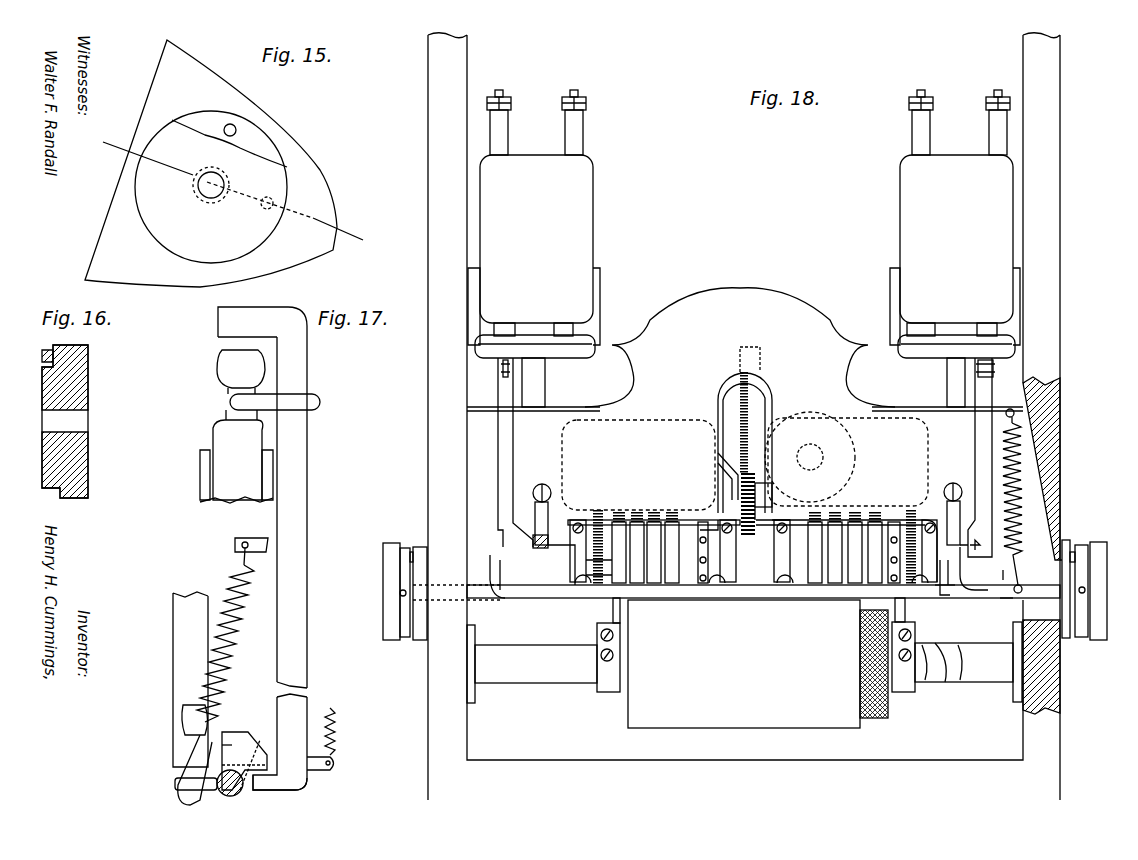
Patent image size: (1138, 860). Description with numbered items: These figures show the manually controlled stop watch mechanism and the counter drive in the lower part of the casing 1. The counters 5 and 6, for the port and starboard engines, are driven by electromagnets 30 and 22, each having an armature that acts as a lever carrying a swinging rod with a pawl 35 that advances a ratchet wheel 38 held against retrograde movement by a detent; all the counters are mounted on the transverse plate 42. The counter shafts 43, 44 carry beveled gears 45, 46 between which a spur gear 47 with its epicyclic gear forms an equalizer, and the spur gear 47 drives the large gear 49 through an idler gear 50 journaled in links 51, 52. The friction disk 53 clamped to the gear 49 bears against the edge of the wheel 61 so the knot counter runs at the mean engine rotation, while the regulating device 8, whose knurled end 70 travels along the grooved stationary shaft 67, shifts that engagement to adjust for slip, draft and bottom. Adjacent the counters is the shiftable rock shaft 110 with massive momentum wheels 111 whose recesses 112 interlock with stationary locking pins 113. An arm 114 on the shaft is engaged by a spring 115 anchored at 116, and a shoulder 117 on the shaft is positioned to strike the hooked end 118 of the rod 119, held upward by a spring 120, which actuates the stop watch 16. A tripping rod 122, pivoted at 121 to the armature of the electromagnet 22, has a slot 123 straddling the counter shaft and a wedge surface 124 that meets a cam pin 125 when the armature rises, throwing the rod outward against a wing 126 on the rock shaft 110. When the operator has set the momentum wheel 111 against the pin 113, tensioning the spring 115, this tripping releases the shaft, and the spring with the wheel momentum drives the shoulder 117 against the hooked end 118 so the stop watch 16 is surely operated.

In FIG. 18, the casing 1 is at (1050, 266).
In FIG. 18, the counter 5 is at (650, 522).
In FIG. 18, the counter 6 is at (842, 520).
In FIG. 18, the regulating device 8 is at (848, 728).
In FIG. 15, the stop watch 16 is at (235, 189).
In FIG. 17, the stop watch 16 is at (225, 456).
In FIG. 18, the electromagnet 22 is at (955, 217).
In FIG. 18, the electromagnet 30 is at (534, 217).
In FIG. 18, the pawl 35 is at (950, 583).
In FIG. 18, the ratchet wheel 38 is at (533, 540).
In FIG. 18, the transverse plate 42 is at (792, 306).
In FIG. 18, the counter shaft 43 is at (974, 539).
In FIG. 18, the counter shaft 44 is at (565, 547).
In FIG. 18, the beveled gear 45 is at (780, 522).
In FIG. 18, the beveled gear 46 is at (713, 530).
In FIG. 18, the spur gear 47 is at (740, 506).
In FIG. 18, the gear wheel 49 is at (740, 397).
In FIG. 18, the idler gear 50 is at (790, 486).
In FIG. 18, the link 51 is at (805, 486).
In FIG. 18, the link 52 is at (722, 458).
In FIG. 18, the friction disk 53 is at (758, 384).
In FIG. 18, the disk or wheel 61 is at (765, 452).
In FIG. 18, the stationary shaft 67 is at (744, 650).
In FIG. 18, the knurled end 70 is at (888, 715).
In FIG. 15, the rock shaft 110 is at (200, 196).
In FIG. 17, the rock shaft 110 is at (232, 797).
In FIG. 18, the rock shaft 110 is at (942, 598).
In FIG. 15, the momentum wheel 111 is at (211, 187).
In FIG. 16, the momentum wheel 111 is at (88, 393).
In FIG. 18, the momentum wheel 111 is at (741, 605).
In FIG. 15, the recess 112 is at (273, 201).
In FIG. 16, the recess 112 is at (88, 357).
In FIG. 15, the locking pin 113 is at (236, 126).
In FIG. 18, the locking pin 113 is at (413, 548).
In FIG. 17, the arm or lever 114 is at (177, 783).
In FIG. 18, the arm or lever 114 is at (1066, 562).
In FIG. 17, the spring 115 is at (238, 572).
In FIG. 18, the spring 115 is at (1025, 447).
In FIG. 17, the spring anchorage 116 is at (258, 537).
In FIG. 18, the spring anchorage 116 is at (1015, 414).
In FIG. 17, the shoulder or lever 117 is at (250, 753).
In FIG. 17, the hooked end 118 is at (270, 794).
In FIG. 18, the hooked end 118 is at (1005, 600).
In FIG. 17, the rod 119 is at (307, 478).
In FIG. 17, the spring 120 is at (336, 742).
In FIG. 17, the pivot 121 is at (275, 402).
In FIG. 17, the tripping rod 122 is at (173, 667).
In FIG. 17, the slot 123 is at (183, 715).
In FIG. 18, the wedge-shaped surface 124 is at (963, 580).
In FIG. 17, the cam pin 125 is at (176, 760).
In FIG. 18, the cam pin 125 is at (962, 540).
In FIG. 17, the wall or wing 126 is at (245, 732).
In FIG. 18, the wall or wing 126 is at (1005, 575).